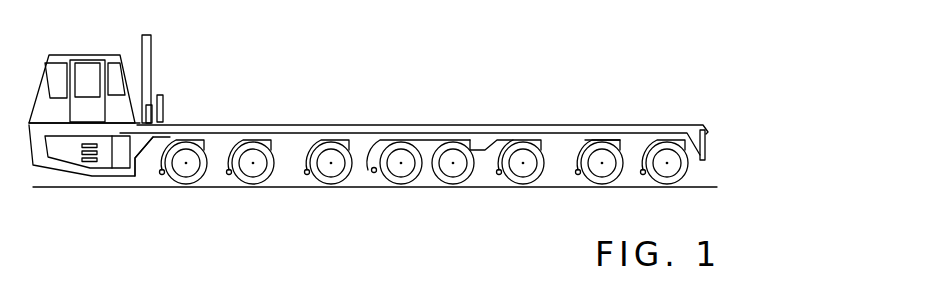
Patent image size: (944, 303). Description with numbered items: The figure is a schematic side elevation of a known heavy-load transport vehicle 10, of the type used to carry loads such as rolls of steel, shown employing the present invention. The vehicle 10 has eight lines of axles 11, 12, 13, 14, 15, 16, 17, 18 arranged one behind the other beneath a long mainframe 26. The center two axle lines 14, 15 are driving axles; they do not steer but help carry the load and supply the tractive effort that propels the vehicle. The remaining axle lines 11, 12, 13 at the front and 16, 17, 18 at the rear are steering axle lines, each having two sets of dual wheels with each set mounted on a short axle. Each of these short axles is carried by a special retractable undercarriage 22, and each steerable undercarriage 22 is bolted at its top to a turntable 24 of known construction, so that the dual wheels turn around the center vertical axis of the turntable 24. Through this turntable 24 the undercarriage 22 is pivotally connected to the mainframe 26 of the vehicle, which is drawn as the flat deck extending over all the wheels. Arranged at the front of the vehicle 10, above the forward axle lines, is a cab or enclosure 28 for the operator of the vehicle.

The vehicle 10 is at (299, 106).
The axle line 11 is at (186, 183).
The axle line 12 is at (250, 181).
The axle line 13 is at (329, 182).
The driving axle 14 is at (400, 184).
The driving axle 15 is at (452, 184).
The axle line 16 is at (520, 183).
The axle line 17 is at (598, 187).
The axle line 18 is at (679, 184).
The retractable undercarriage 22 is at (157, 159).
The turntable 24 is at (525, 140).
The mainframe 26 is at (403, 132).
The cab 28 is at (90, 54).